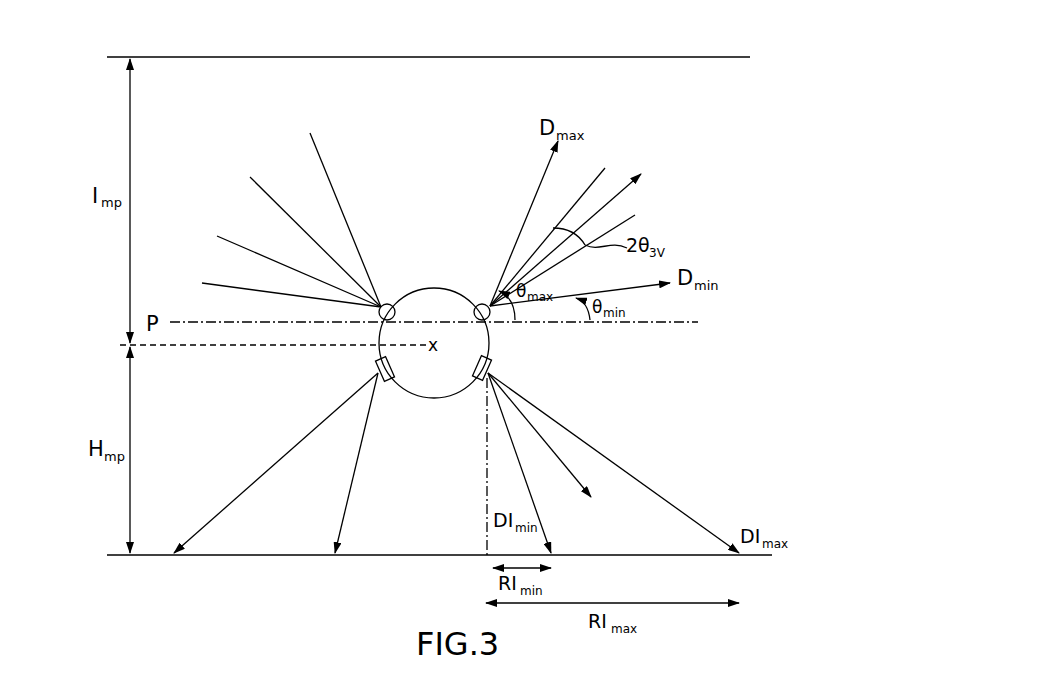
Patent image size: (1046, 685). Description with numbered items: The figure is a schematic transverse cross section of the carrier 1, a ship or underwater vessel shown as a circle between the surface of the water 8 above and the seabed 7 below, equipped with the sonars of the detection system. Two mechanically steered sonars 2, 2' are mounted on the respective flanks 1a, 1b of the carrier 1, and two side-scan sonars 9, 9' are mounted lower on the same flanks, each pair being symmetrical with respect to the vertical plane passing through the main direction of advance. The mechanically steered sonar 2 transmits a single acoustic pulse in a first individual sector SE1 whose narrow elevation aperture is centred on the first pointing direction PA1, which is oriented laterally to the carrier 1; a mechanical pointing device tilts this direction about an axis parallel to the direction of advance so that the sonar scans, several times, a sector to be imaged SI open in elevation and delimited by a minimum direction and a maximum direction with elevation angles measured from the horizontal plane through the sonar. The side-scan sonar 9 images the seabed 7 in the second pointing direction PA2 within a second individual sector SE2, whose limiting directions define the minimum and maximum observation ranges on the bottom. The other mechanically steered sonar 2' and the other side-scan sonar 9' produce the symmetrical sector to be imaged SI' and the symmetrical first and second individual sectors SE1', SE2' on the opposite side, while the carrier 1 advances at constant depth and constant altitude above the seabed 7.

The carrier 1 is at (433, 289).
The flank of the carrier 1a is at (475, 386).
The flank of the carrier 1b is at (391, 386).
The mechanically steered sonar 2 is at (481, 276).
The mechanically steered sonar 2' is at (386, 276).
The seabed 7 is at (755, 557).
The surface of the water 8 is at (663, 56).
The side-scan sonar 9 is at (506, 354).
The side-scan sonar 9' is at (360, 352).
The sector to be imaged SI is at (516, 223).
The sector to be imaged SI' is at (304, 202).
The first individual sector SE1 is at (613, 211).
The first individual sector SE1' is at (282, 238).
The second individual sector SE2 is at (613, 463).
The second individual sector SE2' is at (276, 499).
The first pointing direction PA1 is at (587, 229).
The second pointing direction PA2 is at (557, 446).